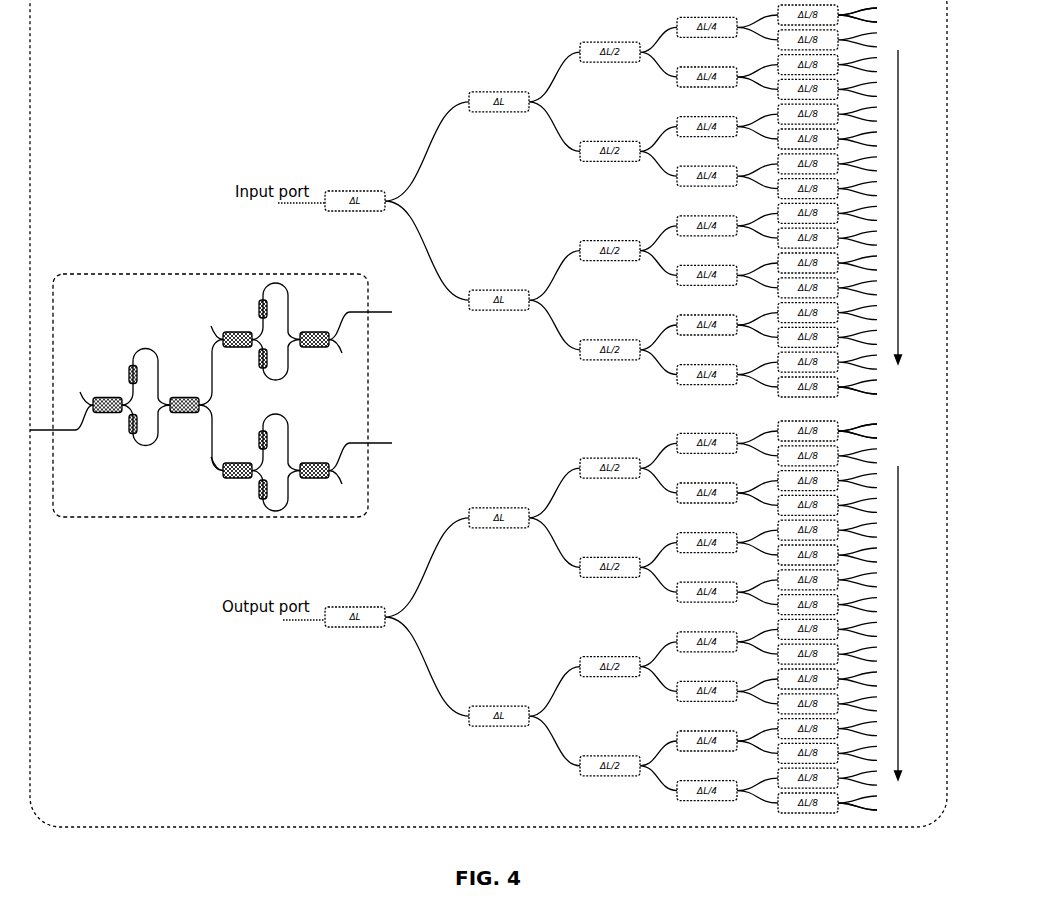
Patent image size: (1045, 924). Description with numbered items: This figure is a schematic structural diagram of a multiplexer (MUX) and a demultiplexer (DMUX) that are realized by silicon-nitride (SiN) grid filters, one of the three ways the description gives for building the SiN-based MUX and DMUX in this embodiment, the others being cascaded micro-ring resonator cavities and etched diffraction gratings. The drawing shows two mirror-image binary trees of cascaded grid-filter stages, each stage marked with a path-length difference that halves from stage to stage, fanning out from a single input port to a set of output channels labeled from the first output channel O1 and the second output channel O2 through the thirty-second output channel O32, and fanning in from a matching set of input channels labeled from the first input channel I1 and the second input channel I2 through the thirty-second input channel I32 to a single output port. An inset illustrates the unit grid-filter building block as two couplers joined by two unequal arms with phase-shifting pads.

The output port 1 O1 is at (872, 12).
The output port 2 O2 is at (872, 25).
The output port 32 O32 is at (877, 396).
The input port 1 I1 is at (869, 427).
The input port 2 I2 is at (869, 441).
The input port 32 I32 is at (873, 813).